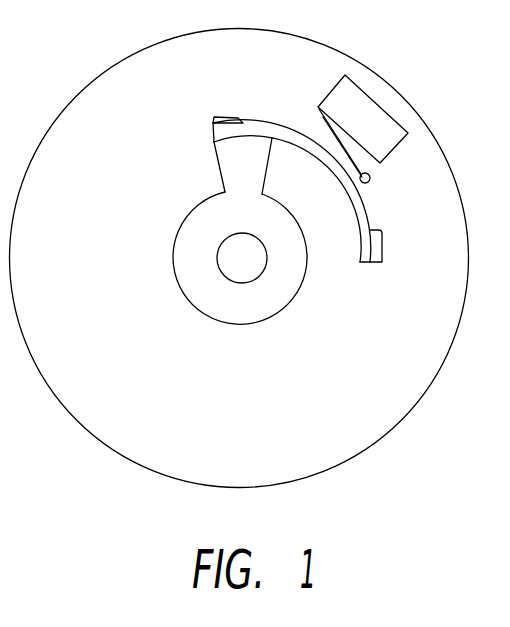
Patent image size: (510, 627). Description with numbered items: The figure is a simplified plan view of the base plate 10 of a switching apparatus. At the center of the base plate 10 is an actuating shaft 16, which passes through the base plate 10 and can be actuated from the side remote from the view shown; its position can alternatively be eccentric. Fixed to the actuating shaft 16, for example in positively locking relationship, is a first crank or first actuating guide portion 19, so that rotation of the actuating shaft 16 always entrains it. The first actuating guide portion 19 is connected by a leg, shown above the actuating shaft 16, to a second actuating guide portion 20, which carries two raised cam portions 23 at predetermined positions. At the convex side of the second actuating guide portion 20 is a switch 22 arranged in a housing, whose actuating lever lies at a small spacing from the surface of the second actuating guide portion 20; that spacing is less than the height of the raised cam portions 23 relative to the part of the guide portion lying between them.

The base plate 10 is at (182, 430).
The actuating shaft 16 is at (252, 279).
The first actuating guide portion 19 is at (252, 214).
The second actuating guide portion 20 is at (337, 177).
The switch 22 is at (373, 132).
The raised cam portions 23 is at (222, 116).